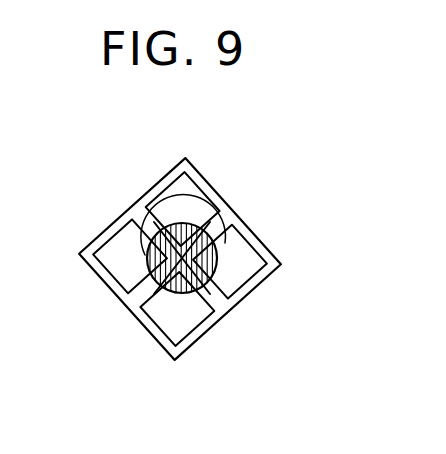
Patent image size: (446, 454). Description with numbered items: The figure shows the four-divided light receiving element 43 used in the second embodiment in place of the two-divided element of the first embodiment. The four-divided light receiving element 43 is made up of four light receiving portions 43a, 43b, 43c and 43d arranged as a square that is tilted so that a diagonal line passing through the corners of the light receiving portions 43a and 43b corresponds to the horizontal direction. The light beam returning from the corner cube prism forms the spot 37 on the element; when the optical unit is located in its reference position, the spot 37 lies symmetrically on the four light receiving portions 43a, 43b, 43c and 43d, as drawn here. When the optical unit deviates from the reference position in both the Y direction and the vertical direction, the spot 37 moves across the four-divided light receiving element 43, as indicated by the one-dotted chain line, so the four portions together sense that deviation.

The spot 37 is at (145, 253).
The 4-divided light receiving element 43 is at (106, 285).
The light receiving portion 43a is at (131, 218).
The light receiving portion 43b is at (237, 280).
The light receiving portion 43c is at (155, 323).
The light receiving portion 43d is at (161, 191).